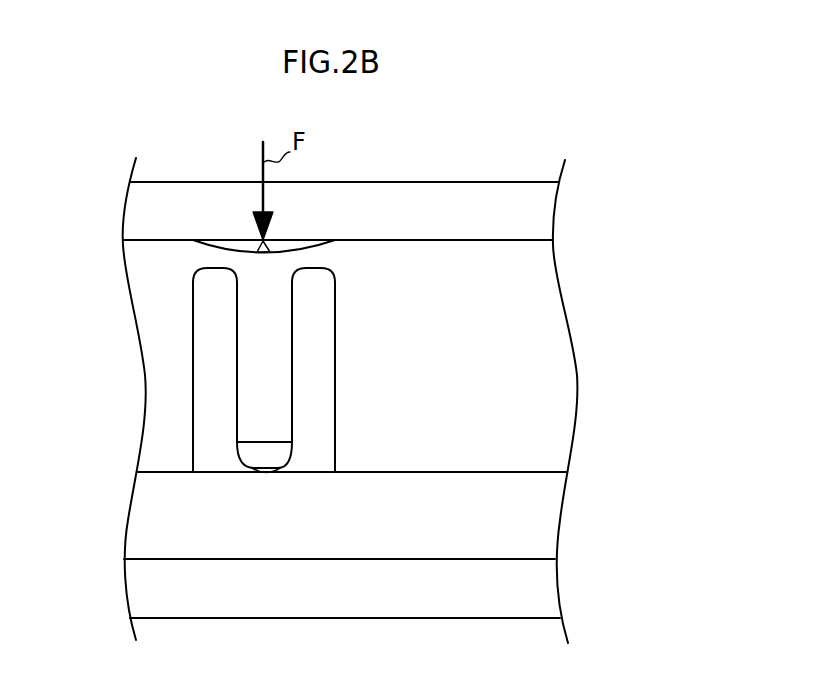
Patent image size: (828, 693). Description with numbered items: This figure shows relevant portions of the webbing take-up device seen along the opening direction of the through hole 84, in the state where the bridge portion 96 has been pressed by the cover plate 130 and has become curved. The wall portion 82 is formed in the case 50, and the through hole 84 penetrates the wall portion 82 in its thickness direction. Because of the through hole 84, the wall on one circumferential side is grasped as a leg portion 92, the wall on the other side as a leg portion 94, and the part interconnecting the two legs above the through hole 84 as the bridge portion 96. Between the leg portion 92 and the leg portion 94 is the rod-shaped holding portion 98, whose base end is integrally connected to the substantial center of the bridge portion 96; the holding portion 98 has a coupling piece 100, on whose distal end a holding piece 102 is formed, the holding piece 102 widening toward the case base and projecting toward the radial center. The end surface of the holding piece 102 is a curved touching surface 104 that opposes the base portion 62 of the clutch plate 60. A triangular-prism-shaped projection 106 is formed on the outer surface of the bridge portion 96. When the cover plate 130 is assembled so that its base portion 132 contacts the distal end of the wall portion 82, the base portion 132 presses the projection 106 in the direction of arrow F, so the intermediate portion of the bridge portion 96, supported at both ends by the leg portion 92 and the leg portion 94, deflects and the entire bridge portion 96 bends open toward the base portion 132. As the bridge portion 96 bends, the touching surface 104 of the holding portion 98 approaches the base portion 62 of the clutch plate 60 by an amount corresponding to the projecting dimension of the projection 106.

The base portion 132 is at (377, 190).
The cover plate 130 is at (344, 151).
The wall portion 82 is at (520, 238).
The case 50 is at (395, 220).
The bridge portion 96 is at (313, 262).
The projection 106 is at (257, 248).
The leg portion 92 is at (182, 362).
The leg portion 94 is at (347, 357).
The holding portion 98 is at (277, 330).
The coupling piece 100 is at (284, 392).
The holding piece 102 is at (270, 442).
The touching surface 104 is at (264, 474).
The through hole 84 is at (334, 460).
The base portion 62 is at (460, 493).
The clutch plate 60 is at (342, 514).